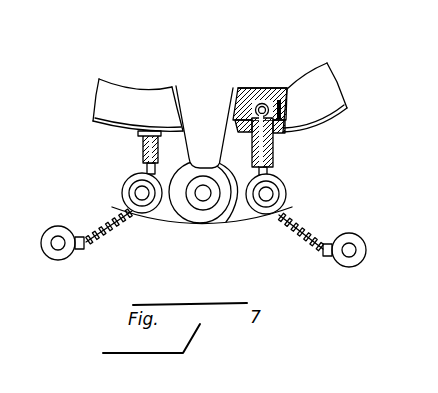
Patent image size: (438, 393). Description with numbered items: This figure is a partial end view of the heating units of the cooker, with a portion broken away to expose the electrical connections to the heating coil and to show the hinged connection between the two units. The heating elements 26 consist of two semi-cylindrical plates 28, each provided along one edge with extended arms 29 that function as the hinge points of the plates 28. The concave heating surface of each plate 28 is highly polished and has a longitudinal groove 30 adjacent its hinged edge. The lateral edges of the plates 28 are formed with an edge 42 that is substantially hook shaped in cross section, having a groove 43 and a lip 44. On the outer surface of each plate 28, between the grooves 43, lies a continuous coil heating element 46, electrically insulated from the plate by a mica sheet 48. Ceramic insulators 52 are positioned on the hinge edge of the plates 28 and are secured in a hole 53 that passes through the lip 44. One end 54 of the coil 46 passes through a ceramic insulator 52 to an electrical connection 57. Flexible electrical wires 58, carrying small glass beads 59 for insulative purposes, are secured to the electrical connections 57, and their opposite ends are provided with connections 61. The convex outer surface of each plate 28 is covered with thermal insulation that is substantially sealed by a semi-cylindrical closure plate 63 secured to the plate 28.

The heating elements 26 is at (113, 82).
The plates 28 is at (148, 88).
The extended arms 29 is at (237, 221).
The longitudinal groove 30 is at (8, 256).
The edge 42 is at (238, 91).
The groove 43 is at (237, 104).
The lip 44 is at (284, 137).
The continuous coil heating element 46 is at (254, 88).
The mica sheet 48 is at (266, 102).
The ceramic insulators 52 is at (143, 152).
The hole 53 is at (234, 121).
The end of coil 54 is at (146, 170).
The electrical connection 57 is at (134, 193).
The flexible electrical wires 58 is at (106, 239).
The glass beads 59 is at (86, 250).
The connections 61 is at (56, 230).
The closure plate 63 is at (102, 126).